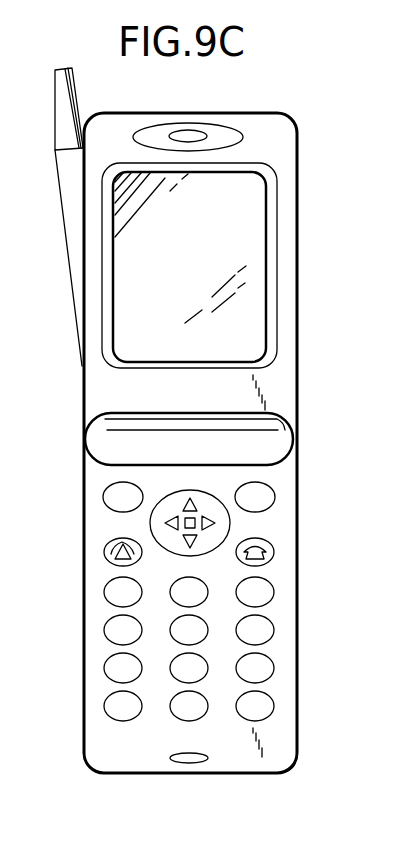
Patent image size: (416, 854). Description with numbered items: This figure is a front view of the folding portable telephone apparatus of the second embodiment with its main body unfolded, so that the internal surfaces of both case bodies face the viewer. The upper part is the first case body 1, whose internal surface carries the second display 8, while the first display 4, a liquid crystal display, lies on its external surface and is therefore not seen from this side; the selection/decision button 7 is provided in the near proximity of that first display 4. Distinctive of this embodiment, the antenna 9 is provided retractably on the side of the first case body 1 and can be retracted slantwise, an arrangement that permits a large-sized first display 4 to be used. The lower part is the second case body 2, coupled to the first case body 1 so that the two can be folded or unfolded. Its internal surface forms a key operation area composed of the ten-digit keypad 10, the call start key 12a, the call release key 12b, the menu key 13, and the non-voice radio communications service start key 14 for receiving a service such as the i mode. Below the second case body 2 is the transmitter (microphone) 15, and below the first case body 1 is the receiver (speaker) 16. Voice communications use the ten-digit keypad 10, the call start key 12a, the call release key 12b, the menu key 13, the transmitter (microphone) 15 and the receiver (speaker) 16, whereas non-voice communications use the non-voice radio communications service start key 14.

The first case body 1 is at (100, 389).
The second case body 2 is at (285, 742).
The first display 4 is at (5, 553).
The selection/decision button 7 is at (146, 440).
The second display 8 is at (145, 279).
The antenna 9 is at (62, 97).
The ten-digit keypad 10 is at (268, 622).
The call start key 12a is at (106, 562).
The call release key 12b is at (268, 543).
The menu key 13 is at (276, 498).
The non-voice radio communications service start key 14 is at (101, 497).
The transmitter (microphone) 15 is at (190, 761).
The receiver (speaker) 16 is at (202, 132).